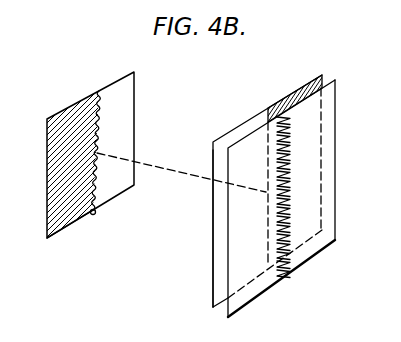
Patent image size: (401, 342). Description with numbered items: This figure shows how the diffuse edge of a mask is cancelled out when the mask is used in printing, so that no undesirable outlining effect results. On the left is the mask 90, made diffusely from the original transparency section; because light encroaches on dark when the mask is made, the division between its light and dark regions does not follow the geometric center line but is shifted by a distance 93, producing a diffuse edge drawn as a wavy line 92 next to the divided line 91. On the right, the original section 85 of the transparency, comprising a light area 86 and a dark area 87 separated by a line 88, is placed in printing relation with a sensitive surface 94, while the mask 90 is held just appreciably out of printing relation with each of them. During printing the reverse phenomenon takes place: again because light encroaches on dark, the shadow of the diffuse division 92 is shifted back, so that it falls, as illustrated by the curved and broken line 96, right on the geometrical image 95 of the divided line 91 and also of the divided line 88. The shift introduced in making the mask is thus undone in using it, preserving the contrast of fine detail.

The section of a transparency 85 is at (227, 133).
The light area 86 is at (213, 240).
The dark area 87 is at (298, 93).
The line 88 is at (266, 113).
The mask 90 is at (113, 90).
The divided line 91 is at (82, 107).
The wavy line 92 is at (97, 150).
The distance 93 is at (93, 215).
The sensitive surface 94 is at (336, 92).
The geometrical image 95 is at (290, 194).
The curved and broken line 96 is at (287, 159).